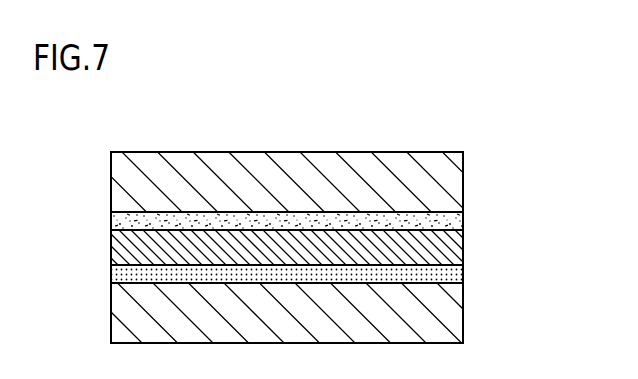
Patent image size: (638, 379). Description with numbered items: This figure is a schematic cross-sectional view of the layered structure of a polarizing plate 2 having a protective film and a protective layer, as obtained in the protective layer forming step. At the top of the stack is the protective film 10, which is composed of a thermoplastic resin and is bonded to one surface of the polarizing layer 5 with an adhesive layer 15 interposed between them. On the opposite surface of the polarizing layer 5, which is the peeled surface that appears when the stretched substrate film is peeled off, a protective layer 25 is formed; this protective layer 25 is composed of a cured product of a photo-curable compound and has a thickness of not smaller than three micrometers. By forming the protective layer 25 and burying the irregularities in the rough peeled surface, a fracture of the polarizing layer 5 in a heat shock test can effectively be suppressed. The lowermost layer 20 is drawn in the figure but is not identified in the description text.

The polarizing plate with protective film and protective layer 2 is at (478, 120).
The protective film 10 is at (452, 186).
The adhesive layer 15 is at (452, 223).
The polarizing layer 5 is at (452, 249).
The protective layer 25 is at (452, 277).
The substrate layer 20 is at (450, 313).